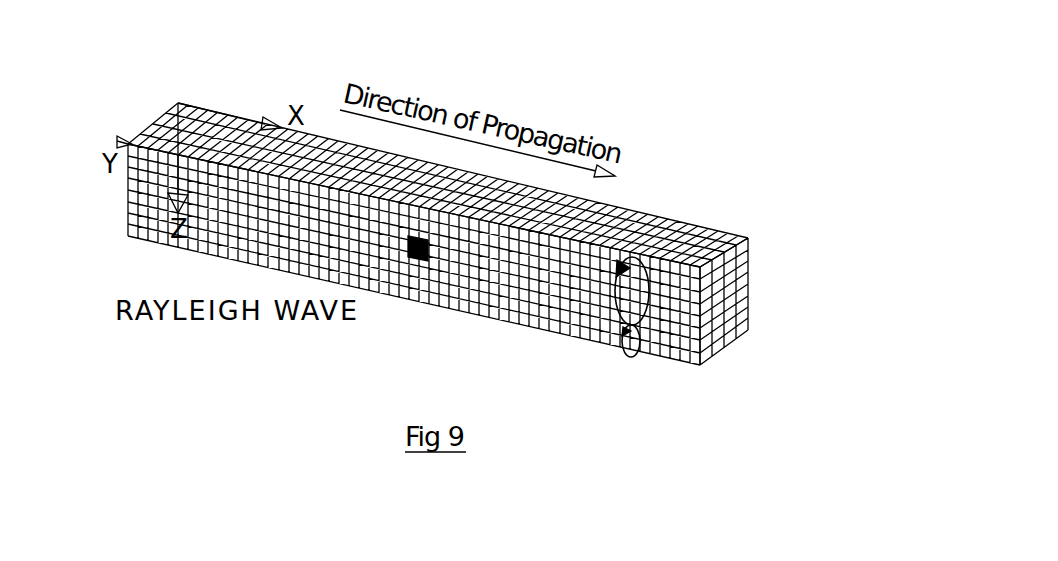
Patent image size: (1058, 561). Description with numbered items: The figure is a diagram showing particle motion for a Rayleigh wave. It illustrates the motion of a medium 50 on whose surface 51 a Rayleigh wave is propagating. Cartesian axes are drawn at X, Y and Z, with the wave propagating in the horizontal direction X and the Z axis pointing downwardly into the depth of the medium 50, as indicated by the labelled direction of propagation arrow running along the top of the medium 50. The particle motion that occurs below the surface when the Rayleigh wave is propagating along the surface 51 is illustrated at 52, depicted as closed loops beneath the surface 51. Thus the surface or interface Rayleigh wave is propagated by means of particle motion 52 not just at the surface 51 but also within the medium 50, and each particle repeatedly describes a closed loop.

The medium 50 is at (452, 292).
The surface 51 is at (652, 232).
The particle motion 52 is at (605, 333).